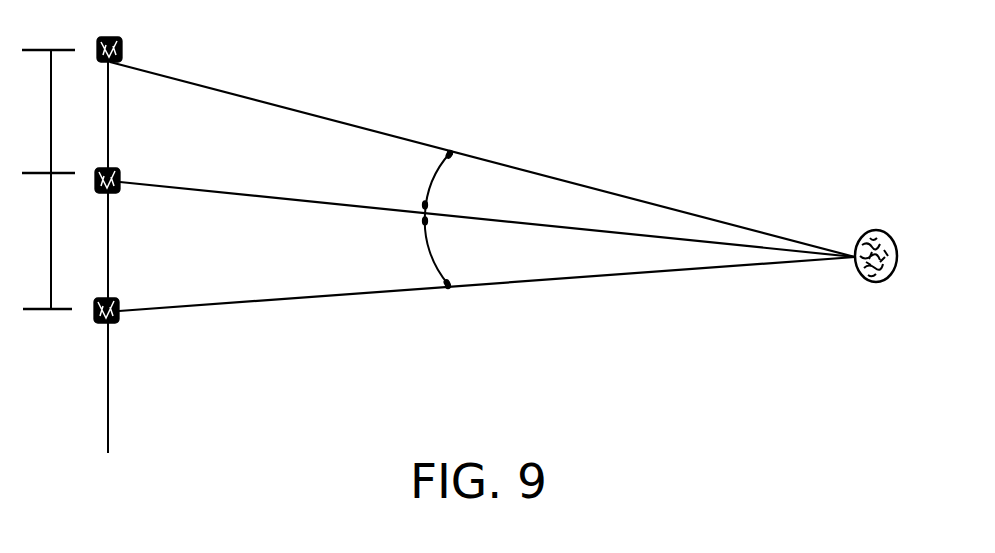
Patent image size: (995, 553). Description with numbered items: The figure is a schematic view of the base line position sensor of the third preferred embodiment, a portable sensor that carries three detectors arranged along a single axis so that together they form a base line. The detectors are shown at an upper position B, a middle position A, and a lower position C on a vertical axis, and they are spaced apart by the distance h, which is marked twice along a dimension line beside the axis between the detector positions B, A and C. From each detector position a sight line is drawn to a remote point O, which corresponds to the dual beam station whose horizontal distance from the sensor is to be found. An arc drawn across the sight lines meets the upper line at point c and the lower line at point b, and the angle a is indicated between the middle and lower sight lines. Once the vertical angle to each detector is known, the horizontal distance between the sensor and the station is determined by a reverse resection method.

The upper detector position B is at (102, 38).
The middle detector position A is at (99, 166).
The lower detector position C is at (100, 299).
The object / radiation source O is at (876, 237).
The detector spacing distance h is at (48, 179).
The angle between sight lines A-O and C-O a is at (430, 250).
The intersection point of arc with line B-O c is at (444, 139).
The intersection point of arc with line C-O b is at (451, 302).